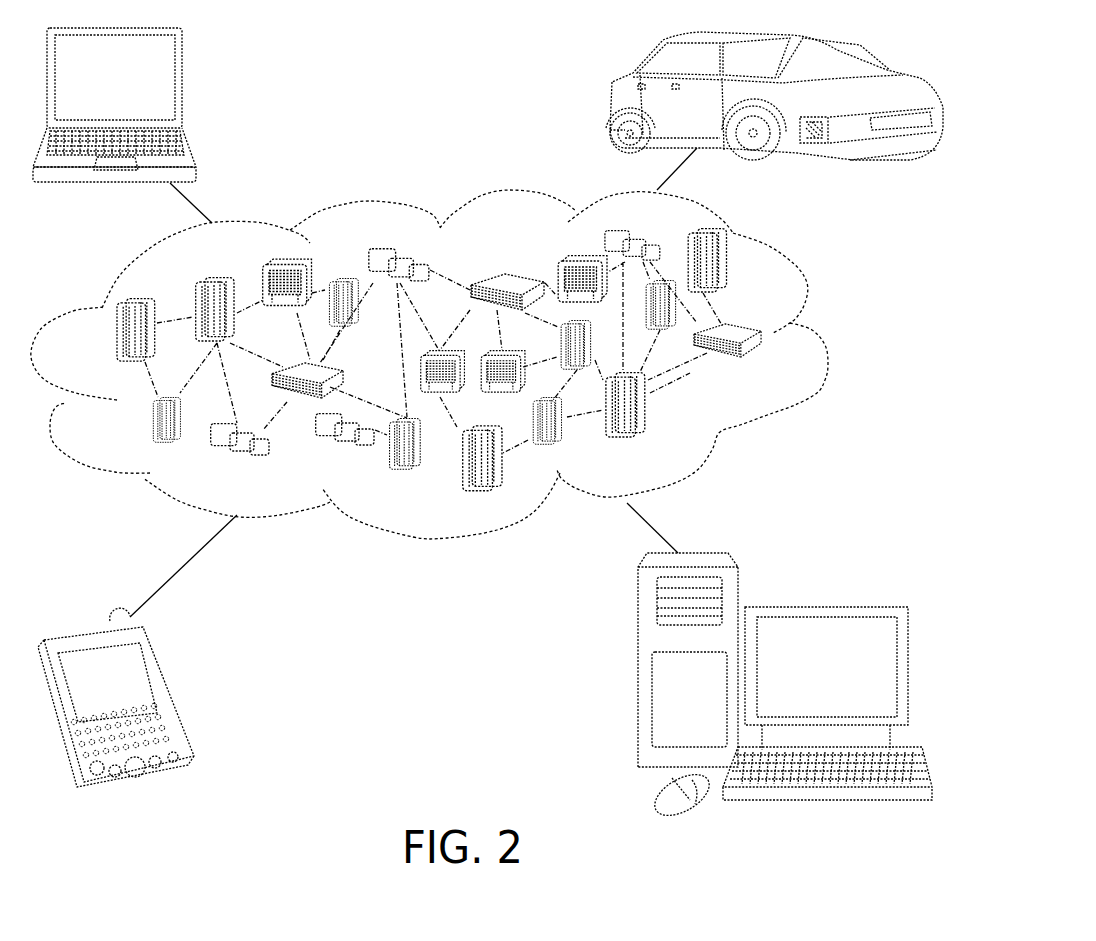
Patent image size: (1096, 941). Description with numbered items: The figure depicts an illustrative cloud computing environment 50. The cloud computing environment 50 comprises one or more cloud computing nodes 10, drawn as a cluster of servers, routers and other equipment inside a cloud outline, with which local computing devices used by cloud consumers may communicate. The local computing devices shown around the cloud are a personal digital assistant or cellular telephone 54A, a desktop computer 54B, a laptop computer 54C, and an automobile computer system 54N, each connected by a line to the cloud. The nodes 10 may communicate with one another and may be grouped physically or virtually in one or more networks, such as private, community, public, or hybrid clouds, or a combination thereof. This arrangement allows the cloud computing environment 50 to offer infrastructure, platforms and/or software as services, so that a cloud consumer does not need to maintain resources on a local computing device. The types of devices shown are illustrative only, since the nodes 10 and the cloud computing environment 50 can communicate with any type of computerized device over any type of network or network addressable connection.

The cloud computing environment 50 is at (823, 338).
The cloud computing node 10 is at (765, 366).
The personal digital assistant (PDA) or cellular telephone 54A is at (172, 697).
The desktop computer 54B is at (823, 607).
The laptop computer 54C is at (183, 85).
The automobile computer system 54N is at (610, 112).